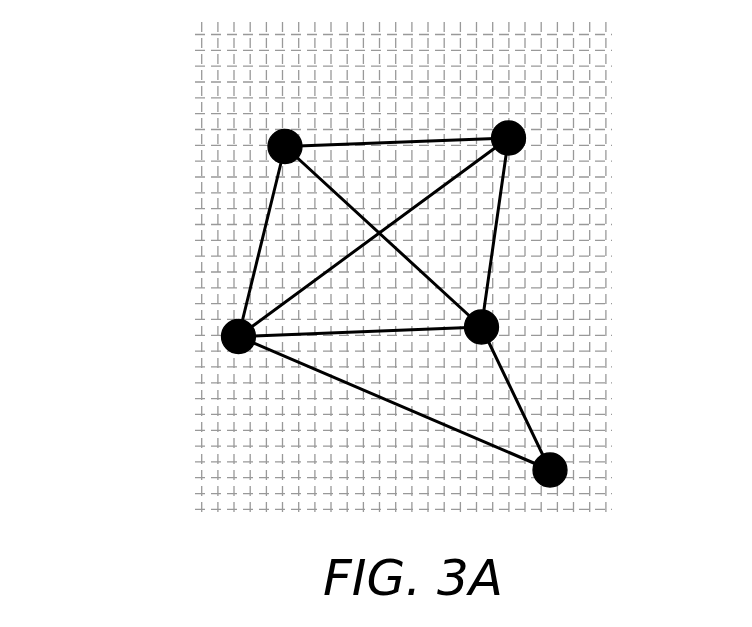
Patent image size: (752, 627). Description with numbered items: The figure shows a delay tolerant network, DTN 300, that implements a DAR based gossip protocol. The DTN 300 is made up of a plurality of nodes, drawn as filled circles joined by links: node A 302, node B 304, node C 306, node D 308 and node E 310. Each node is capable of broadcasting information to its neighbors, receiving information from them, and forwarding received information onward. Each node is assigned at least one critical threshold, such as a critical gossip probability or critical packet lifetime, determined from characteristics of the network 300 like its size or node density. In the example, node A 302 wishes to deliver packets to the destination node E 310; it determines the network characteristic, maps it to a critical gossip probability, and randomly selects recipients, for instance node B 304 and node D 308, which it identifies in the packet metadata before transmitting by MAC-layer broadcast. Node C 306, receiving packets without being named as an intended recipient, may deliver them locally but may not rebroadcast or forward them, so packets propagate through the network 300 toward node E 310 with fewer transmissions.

The DTN 300 is at (181, 46).
The node A 302 is at (223, 333).
The node B 304 is at (270, 138).
The node C 306 is at (497, 320).
The node D 308 is at (523, 130).
The node E 310 is at (566, 462).